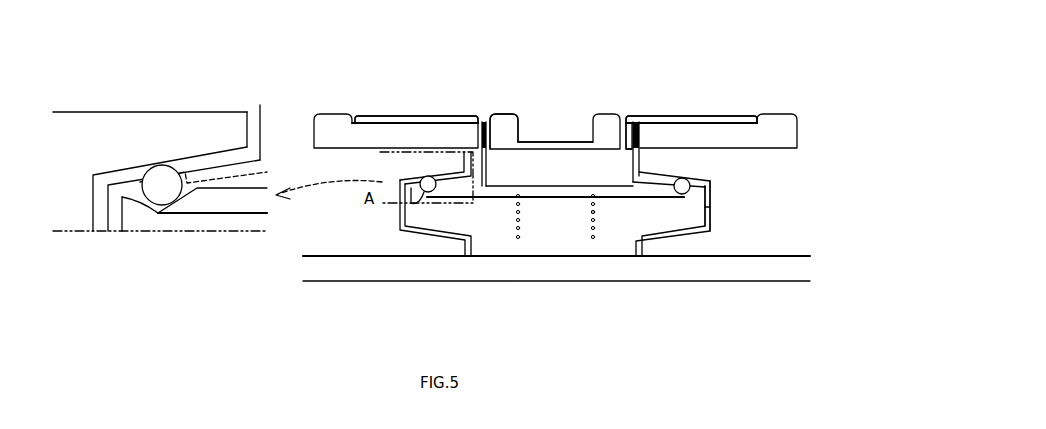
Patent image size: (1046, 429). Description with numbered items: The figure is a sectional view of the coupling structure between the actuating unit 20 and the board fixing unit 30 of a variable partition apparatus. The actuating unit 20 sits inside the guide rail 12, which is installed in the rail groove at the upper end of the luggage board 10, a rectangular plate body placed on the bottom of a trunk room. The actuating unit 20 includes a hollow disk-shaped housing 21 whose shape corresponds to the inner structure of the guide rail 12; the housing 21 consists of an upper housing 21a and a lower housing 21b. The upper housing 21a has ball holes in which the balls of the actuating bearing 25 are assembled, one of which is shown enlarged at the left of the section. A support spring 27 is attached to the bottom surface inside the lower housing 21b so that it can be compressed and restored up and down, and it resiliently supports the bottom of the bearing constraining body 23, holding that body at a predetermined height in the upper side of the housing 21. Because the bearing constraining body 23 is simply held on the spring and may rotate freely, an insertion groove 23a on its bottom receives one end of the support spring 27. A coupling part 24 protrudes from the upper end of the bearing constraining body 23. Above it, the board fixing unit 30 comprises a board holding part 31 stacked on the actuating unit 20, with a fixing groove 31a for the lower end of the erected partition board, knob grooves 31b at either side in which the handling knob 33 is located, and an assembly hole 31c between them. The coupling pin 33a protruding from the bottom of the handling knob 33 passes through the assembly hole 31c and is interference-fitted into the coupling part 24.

The luggage board 10 is at (376, 270).
The guide rail 12 is at (341, 162).
The actuating unit 20 is at (485, 257).
The housing 21 is at (790, 185).
The upper housing 21a is at (706, 186).
The lower housing 21b is at (706, 214).
The bearing constraining body 23 is at (553, 199).
The insertion groove 23a is at (645, 236).
The coupling part 24 is at (495, 165).
The actuating bearing 25 is at (406, 208).
The support spring 27 is at (595, 238).
The board fixing unit 30 is at (415, 106).
The board holding part 31 is at (781, 110).
The fixing groove 31a is at (587, 141).
The knob groove 31b is at (722, 116).
The assembly hole 31c is at (497, 114).
The handling knob 33 is at (685, 116).
The coupling pin 33a is at (631, 140).